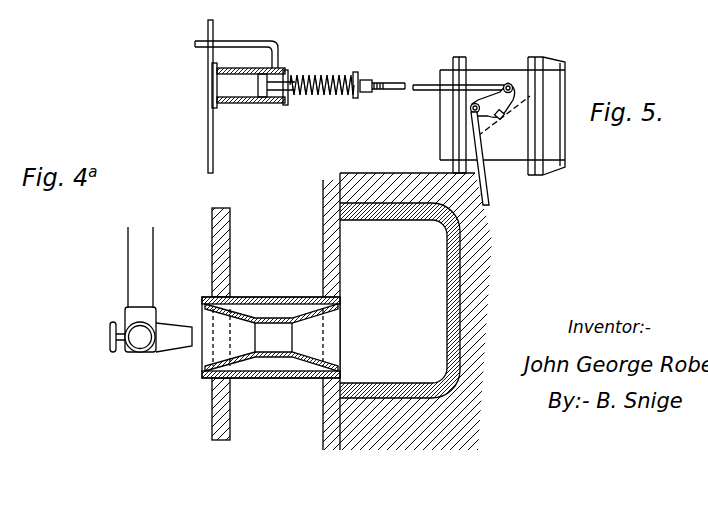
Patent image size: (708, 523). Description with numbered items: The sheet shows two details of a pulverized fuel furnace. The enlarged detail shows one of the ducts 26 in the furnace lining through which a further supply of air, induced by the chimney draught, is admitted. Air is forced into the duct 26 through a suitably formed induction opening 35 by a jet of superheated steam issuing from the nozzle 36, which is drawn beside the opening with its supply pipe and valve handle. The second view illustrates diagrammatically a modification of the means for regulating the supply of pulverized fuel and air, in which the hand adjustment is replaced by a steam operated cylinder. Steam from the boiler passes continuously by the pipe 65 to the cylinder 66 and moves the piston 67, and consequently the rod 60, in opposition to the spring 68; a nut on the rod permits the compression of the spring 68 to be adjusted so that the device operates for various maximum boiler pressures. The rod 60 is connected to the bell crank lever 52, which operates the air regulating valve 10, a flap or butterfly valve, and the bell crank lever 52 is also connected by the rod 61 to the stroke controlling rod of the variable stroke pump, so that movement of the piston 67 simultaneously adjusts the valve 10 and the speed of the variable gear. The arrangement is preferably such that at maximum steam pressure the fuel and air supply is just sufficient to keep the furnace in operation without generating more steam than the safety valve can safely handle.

In FIG. 5, the air regulating valve 10 is at (520, 96).
In FIG. 4A, the duct 26 is at (407, 311).
In FIG. 4A, the induction opening 35 is at (306, 355).
In FIG. 4A, the nozzle 36 is at (170, 332).
In FIG. 5, the bell crank lever 52 is at (498, 98).
In FIG. 5, the rod 60 is at (398, 92).
In FIG. 5, the rod 61 is at (487, 190).
In FIG. 5, the pipe 65 is at (228, 45).
In FIG. 5, the cylinder 66 is at (238, 88).
In FIG. 5, the piston 67 is at (265, 100).
In FIG. 5, the spring 68 is at (329, 95).